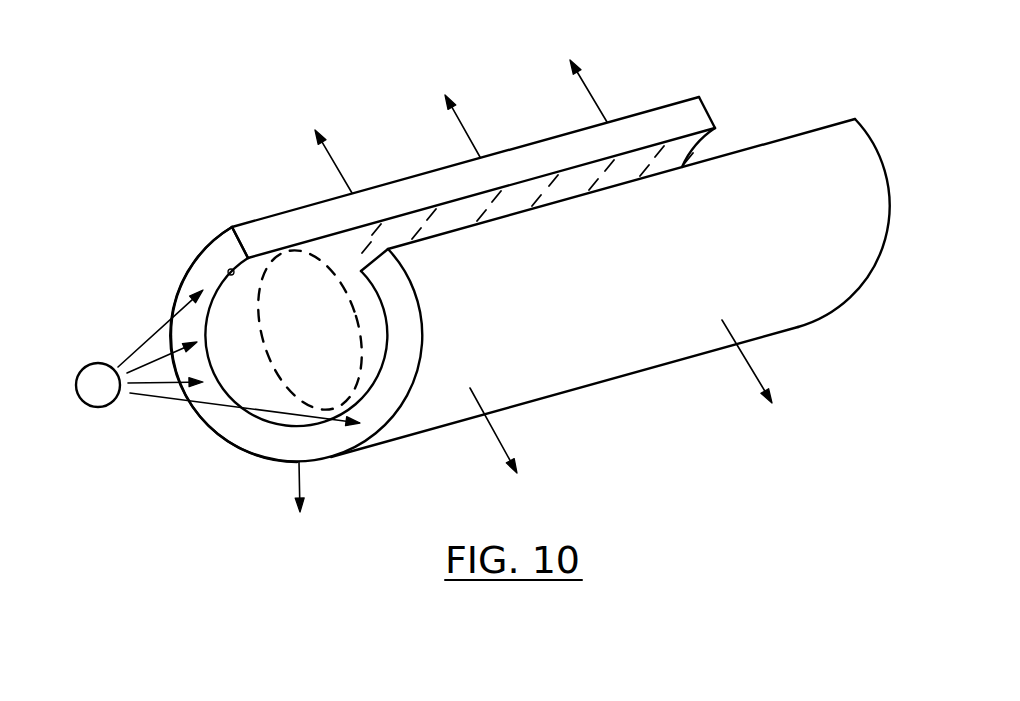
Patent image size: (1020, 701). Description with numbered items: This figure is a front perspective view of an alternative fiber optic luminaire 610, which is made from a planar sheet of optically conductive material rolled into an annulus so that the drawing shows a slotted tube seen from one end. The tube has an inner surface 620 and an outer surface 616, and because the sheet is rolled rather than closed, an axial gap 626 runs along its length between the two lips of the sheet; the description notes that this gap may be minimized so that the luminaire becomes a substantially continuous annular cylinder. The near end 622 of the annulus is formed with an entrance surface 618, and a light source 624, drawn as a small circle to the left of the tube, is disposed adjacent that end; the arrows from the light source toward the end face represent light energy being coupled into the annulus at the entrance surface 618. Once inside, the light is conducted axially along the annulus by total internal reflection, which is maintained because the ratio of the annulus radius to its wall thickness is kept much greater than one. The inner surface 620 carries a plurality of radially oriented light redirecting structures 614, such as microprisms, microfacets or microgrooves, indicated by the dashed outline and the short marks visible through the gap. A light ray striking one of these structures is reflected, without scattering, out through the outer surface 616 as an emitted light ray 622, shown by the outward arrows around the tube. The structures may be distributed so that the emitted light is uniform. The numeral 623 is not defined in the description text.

The fiber optic luminaire 610 is at (628, 393).
The light redirecting structures 614 is at (334, 300).
The outer surface 616 is at (433, 413).
The entrance surface 618 is at (192, 275).
The inner surface 620 is at (227, 268).
The end / light ray 622 is at (333, 155).
The end face 623 is at (267, 453).
The light source 624 is at (98, 408).
The axial gap 626 is at (785, 118).